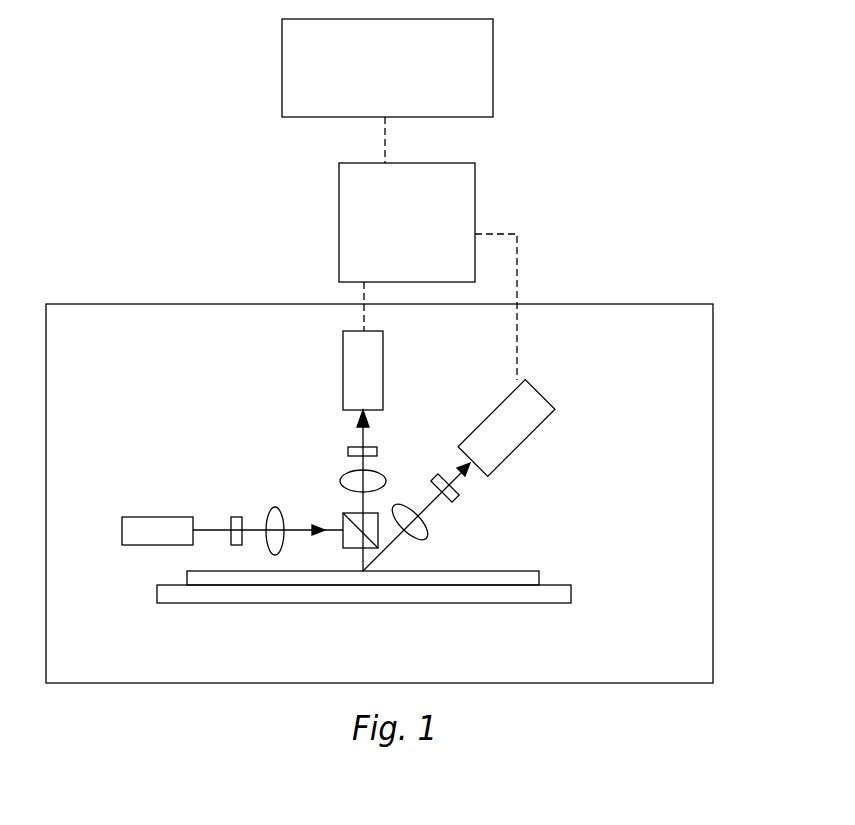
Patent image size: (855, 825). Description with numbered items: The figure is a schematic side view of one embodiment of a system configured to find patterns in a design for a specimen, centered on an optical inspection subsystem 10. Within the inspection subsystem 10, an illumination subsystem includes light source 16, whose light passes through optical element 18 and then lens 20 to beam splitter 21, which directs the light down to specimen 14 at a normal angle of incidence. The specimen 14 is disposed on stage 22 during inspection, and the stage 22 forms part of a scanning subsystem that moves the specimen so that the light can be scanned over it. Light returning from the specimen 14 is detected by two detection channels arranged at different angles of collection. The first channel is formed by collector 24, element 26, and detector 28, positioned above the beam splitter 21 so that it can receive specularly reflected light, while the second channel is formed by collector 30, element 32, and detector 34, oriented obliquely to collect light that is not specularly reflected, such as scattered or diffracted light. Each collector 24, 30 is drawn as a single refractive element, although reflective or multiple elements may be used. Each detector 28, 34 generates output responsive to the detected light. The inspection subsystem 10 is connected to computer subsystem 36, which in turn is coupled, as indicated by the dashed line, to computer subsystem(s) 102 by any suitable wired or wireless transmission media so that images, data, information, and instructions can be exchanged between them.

The inspection subsystem 10 is at (411, 488).
The specimen 14 is at (187, 573).
The light source 16 is at (132, 517).
The optical element 18 is at (237, 517).
The lens 20 is at (273, 508).
The beam splitter 21 is at (353, 513).
The stage 22 is at (157, 597).
The collector 24 is at (343, 475).
The element 26 is at (348, 448).
The detector 28 is at (343, 375).
The collector 30 is at (423, 537).
The element 32 is at (455, 498).
The detector 34 is at (537, 428).
The computer subsystem 36 is at (393, 263).
The computer subsystem(s) 102 is at (367, 108).